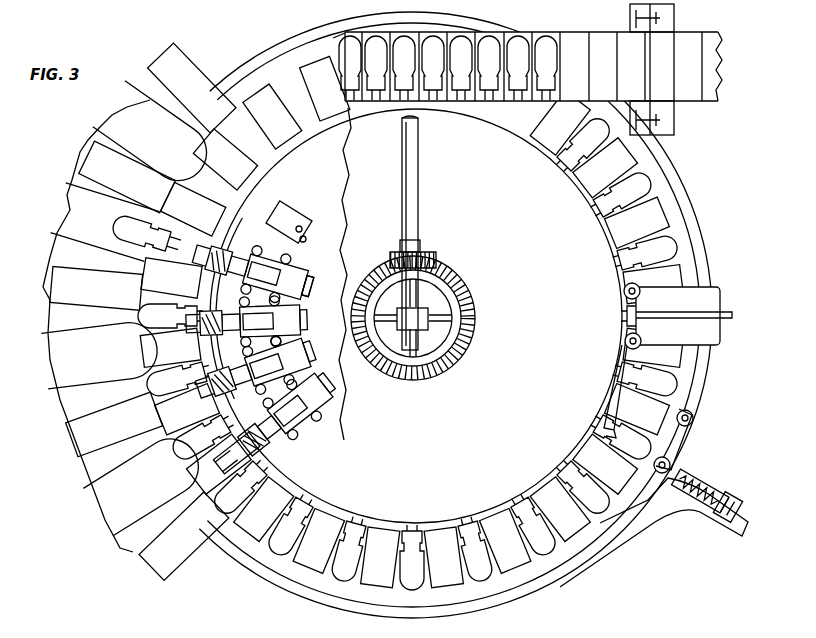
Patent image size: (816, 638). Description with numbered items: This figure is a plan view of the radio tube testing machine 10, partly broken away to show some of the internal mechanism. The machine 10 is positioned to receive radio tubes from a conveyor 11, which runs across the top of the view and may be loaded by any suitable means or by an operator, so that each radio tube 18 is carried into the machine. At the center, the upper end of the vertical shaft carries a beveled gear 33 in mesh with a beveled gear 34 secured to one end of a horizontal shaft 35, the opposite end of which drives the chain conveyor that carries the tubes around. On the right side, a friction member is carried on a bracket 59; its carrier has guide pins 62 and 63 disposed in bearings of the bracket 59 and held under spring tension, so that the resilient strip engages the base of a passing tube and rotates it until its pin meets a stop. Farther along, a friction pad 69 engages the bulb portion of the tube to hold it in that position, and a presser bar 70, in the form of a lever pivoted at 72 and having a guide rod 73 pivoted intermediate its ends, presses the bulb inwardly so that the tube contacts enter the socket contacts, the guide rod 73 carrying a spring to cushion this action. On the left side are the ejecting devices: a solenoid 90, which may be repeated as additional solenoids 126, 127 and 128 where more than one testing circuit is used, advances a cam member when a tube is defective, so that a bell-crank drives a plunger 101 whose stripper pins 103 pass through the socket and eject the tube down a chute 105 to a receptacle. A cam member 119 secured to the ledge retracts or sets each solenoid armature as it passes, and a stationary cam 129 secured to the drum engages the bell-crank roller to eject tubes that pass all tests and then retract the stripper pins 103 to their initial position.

The radio tube testing machine 10 is at (607, 247).
The conveyor 11 is at (691, 24).
The radio tube 18 is at (303, 556).
The beveled gear 33 is at (462, 283).
The beveled gear 34 is at (428, 256).
The horizontal shaft 35 is at (421, 214).
The bracket 59 is at (713, 305).
The guide pin 62 is at (623, 292).
The guide pin 63 is at (624, 343).
The friction pad 69 is at (625, 393).
The presser bar 70 is at (681, 443).
The pivot 72 is at (694, 420).
The guide rod 73 is at (666, 473).
The solenoid 90 is at (314, 398).
The plunger 101 is at (290, 264).
The stripper pins 103 is at (229, 250).
The chute 105 is at (128, 548).
The cam member 119 is at (276, 430).
The solenoid 126 is at (306, 352).
The solenoid 127 is at (296, 312).
The solenoid 128 is at (322, 274).
The cam 129 is at (304, 211).